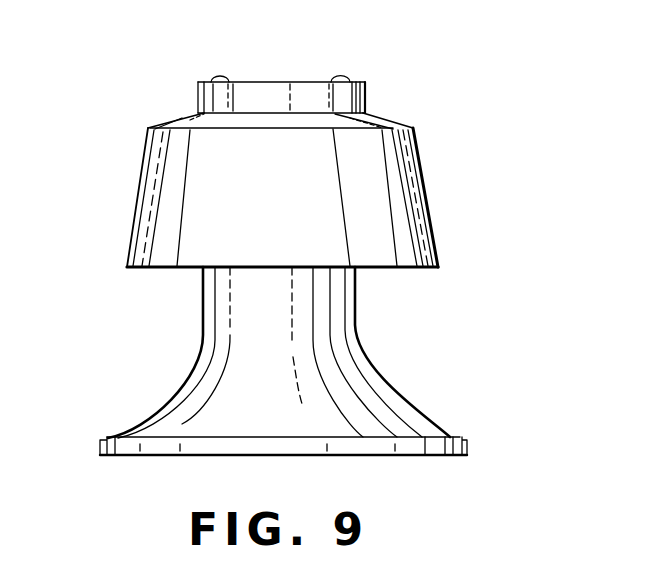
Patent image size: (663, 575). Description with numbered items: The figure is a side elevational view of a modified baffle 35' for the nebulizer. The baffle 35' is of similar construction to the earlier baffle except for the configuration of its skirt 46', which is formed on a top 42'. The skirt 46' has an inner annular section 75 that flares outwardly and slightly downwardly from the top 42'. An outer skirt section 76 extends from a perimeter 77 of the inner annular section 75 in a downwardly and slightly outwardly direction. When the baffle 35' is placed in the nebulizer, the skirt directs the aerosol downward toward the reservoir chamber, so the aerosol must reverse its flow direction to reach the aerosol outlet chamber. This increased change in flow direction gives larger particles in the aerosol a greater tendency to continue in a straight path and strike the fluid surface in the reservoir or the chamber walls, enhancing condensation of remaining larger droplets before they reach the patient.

The modified baffle 35' is at (294, 232).
The top 42' is at (287, 61).
The skirt 46' is at (229, 102).
The inner annular section 75 is at (380, 117).
The outer skirt section 76 is at (430, 213).
The perimeter 77 is at (148, 129).